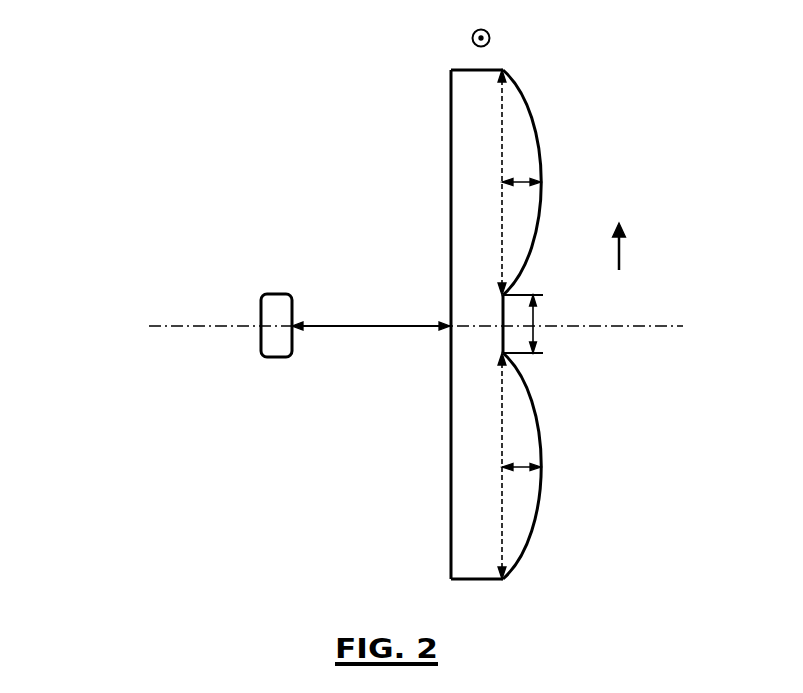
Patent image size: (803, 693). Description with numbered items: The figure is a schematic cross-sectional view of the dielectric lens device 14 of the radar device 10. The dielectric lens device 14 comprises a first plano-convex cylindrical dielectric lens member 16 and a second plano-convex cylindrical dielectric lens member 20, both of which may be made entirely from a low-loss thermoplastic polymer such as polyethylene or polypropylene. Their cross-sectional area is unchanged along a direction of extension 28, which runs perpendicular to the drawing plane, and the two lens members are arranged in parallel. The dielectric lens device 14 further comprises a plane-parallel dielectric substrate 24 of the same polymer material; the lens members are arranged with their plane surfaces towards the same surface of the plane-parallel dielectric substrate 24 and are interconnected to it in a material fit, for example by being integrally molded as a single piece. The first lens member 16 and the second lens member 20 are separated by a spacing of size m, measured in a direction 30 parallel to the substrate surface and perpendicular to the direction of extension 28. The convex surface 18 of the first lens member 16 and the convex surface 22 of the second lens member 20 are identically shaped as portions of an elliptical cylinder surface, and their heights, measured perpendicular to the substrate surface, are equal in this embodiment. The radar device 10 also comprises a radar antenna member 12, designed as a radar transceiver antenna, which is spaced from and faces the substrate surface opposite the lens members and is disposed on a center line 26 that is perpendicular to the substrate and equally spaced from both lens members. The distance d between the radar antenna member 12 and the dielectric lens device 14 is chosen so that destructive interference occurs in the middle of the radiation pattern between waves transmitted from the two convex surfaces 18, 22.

The radar device 10 is at (102, 88).
The radar antenna member 12 is at (253, 286).
The dielectric lens device 14 is at (404, 119).
The first plano-convex cylindrical dielectric lens member 16 is at (530, 202).
The convex surface of the first plano-convex cylindrical dielectric lens member 18 is at (532, 112).
The second plano-convex cylindrical dielectric lens member 20 is at (530, 498).
The convex surface of the second plano-convex cylindrical dielectric lens member 22 is at (530, 550).
The plane-parallel dielectric substrate 24 is at (462, 440).
The center line 26 is at (167, 323).
The direction of extension 28 is at (490, 36).
The direction 30 is at (617, 249).